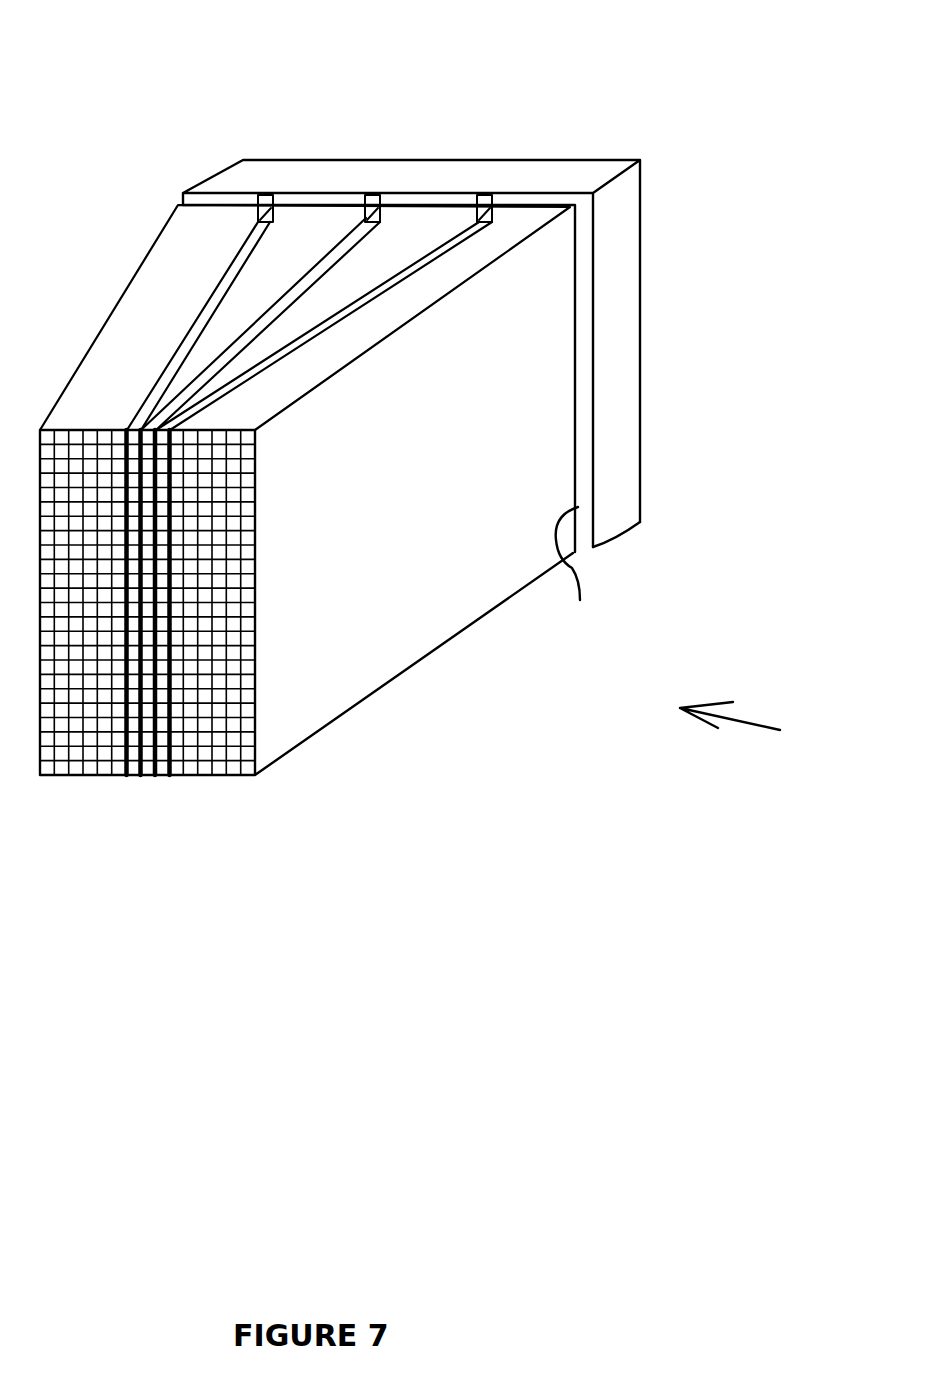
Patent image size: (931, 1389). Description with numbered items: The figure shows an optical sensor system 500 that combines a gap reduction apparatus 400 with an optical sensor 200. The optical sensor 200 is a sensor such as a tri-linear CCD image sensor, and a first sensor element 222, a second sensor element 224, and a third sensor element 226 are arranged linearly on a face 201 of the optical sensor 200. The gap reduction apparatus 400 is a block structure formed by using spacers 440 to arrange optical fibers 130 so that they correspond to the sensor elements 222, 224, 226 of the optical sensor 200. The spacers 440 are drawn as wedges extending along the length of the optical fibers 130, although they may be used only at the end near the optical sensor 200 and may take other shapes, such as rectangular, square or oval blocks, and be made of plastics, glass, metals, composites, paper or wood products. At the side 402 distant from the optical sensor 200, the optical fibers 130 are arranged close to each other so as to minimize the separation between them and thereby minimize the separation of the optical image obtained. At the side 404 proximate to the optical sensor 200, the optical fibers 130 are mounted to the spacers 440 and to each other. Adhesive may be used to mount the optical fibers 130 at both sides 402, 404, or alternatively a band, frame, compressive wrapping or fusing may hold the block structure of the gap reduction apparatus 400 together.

The gap reduction apparatus 400 is at (115, 249).
The side 402 is at (275, 787).
The optical fibers 130 is at (167, 777).
The spacers 440 is at (408, 227).
The optical sensor 200 is at (573, 163).
The face 201 is at (582, 527).
The first sensor element 222 is at (257, 220).
The second sensor element 224 is at (372, 213).
The third sensor element 226 is at (483, 213).
The side 404 is at (573, 578).
The optical sensor system 500 is at (762, 729).